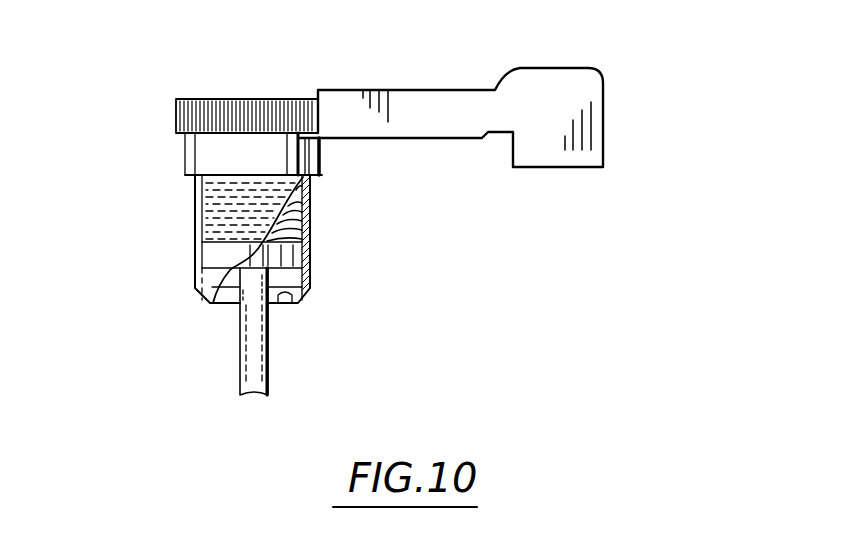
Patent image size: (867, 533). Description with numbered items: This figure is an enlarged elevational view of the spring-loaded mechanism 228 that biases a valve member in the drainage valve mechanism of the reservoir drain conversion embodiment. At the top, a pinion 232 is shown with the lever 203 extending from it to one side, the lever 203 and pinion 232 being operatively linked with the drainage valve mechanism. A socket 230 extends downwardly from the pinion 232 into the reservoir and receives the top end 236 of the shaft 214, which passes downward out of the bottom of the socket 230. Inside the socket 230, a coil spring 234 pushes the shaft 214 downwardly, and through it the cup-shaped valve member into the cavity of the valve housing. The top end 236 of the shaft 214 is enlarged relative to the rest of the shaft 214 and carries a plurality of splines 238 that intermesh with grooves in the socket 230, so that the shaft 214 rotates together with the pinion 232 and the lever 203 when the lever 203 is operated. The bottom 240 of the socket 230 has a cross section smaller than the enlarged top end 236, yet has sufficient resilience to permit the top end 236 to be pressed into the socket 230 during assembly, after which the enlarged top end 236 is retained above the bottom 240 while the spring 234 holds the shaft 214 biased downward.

The lever 203 is at (467, 100).
The shaft 214 is at (240, 362).
The spring-loaded mechanism 228 is at (152, 222).
The socket 230 is at (194, 266).
The pinion 232 is at (232, 103).
The coil spring 234 is at (308, 216).
The top end 236 is at (306, 292).
The splines 238 is at (313, 258).
The bottom 240 is at (277, 307).